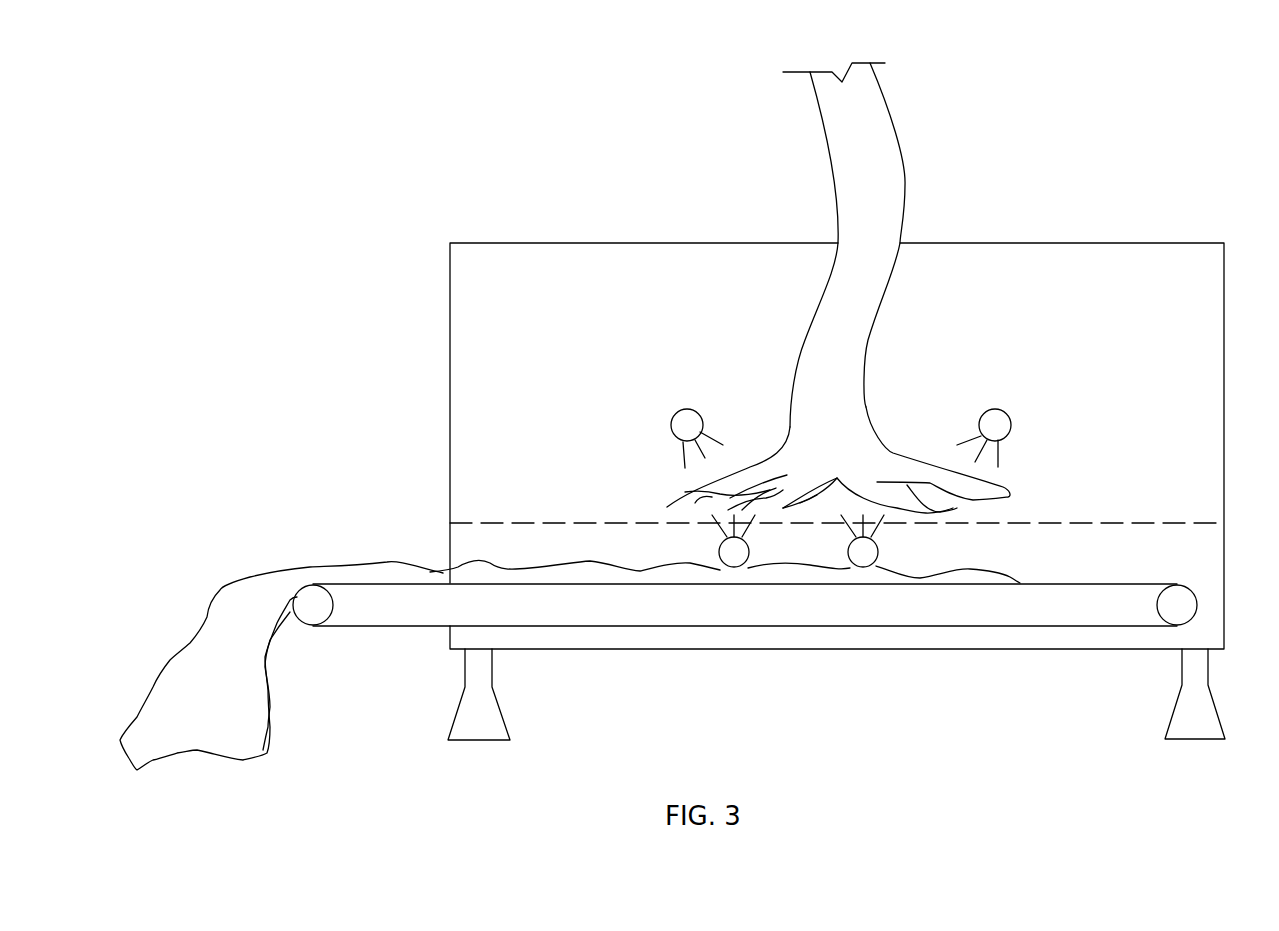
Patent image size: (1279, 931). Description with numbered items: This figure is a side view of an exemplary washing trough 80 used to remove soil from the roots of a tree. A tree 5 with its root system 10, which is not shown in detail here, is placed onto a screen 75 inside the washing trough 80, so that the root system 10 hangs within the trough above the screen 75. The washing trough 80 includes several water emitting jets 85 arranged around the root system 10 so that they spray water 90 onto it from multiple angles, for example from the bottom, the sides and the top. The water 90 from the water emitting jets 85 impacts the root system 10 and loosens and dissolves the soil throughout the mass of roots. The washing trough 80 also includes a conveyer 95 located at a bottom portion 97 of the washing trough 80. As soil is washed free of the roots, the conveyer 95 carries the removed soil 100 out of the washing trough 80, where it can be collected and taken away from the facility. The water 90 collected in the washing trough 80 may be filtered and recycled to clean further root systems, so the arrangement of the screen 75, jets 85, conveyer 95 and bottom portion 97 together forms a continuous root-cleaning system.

The tree 5 is at (877, 241).
The root system 10 is at (847, 450).
The screen 75 is at (1168, 522).
The washing trough 80 is at (1189, 308).
The water emitting jets 85 is at (687, 408).
The water 90 is at (685, 455).
The conveyer 95 is at (1173, 595).
The bottom portion 97 is at (1050, 650).
The removed soil 100 is at (219, 717).